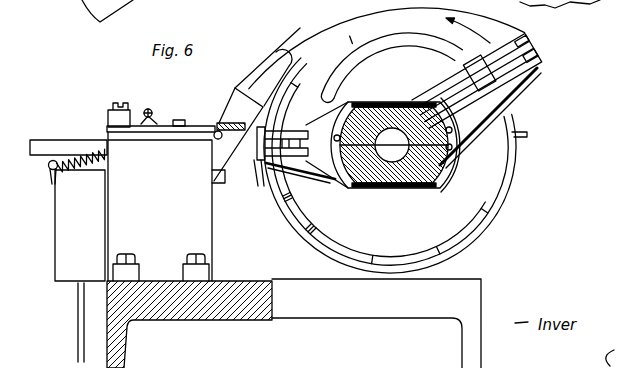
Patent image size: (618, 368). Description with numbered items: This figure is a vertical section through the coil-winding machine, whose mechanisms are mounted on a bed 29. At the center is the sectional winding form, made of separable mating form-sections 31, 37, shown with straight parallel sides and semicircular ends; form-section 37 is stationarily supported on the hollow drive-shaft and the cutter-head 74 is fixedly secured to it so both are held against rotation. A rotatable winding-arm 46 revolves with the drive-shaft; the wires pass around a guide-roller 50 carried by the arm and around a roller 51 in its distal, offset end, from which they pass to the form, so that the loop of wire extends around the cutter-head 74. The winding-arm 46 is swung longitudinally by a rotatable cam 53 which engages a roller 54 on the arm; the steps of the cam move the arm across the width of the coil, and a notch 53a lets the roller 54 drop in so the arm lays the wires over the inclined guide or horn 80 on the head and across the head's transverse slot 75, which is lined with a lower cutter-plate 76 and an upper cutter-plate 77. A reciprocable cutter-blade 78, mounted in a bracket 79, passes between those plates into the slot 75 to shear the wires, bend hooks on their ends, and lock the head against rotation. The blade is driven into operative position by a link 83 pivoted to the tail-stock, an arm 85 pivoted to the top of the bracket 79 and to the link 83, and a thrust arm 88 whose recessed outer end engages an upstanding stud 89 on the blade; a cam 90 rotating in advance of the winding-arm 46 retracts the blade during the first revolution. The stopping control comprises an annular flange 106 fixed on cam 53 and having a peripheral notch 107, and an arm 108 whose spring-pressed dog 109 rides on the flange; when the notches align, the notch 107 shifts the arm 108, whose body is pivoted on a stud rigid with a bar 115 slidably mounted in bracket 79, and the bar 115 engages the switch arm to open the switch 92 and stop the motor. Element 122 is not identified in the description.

The bed 29 is at (250, 318).
The form-section 31 is at (450, 140).
The form-section 37 is at (415, 185).
The winding-arm 46 is at (446, 83).
The guide-roller 50 is at (537, 68).
The roller 51 is at (535, 53).
The cam 53 is at (494, 193).
The notch 53a is at (312, 220).
The roller 54 is at (509, 100).
The cutter-head 74 is at (347, 98).
The transverse slot 75 is at (258, 161).
The lower cutter-plate 76 is at (261, 186).
The upper cutter-plate 77 is at (263, 139).
The cutter-blade 78 is at (57, 139).
The bracket 79 is at (160, 206).
The inclined guide or horn 80 is at (288, 116).
The link 83 is at (212, 124).
The arm 85 is at (129, 125).
The thrust arm 88 is at (172, 125).
The stud 89 is at (193, 125).
The cam 90 is at (387, 55).
The switch 92 is at (80, 225).
The annular flange 106 is at (490, 218).
The peripheral notch 107 is at (514, 123).
The arm 108 is at (236, 83).
The dog 109 is at (298, 63).
The bar 115 is at (216, 186).
The bolt 122 is at (94, 138).